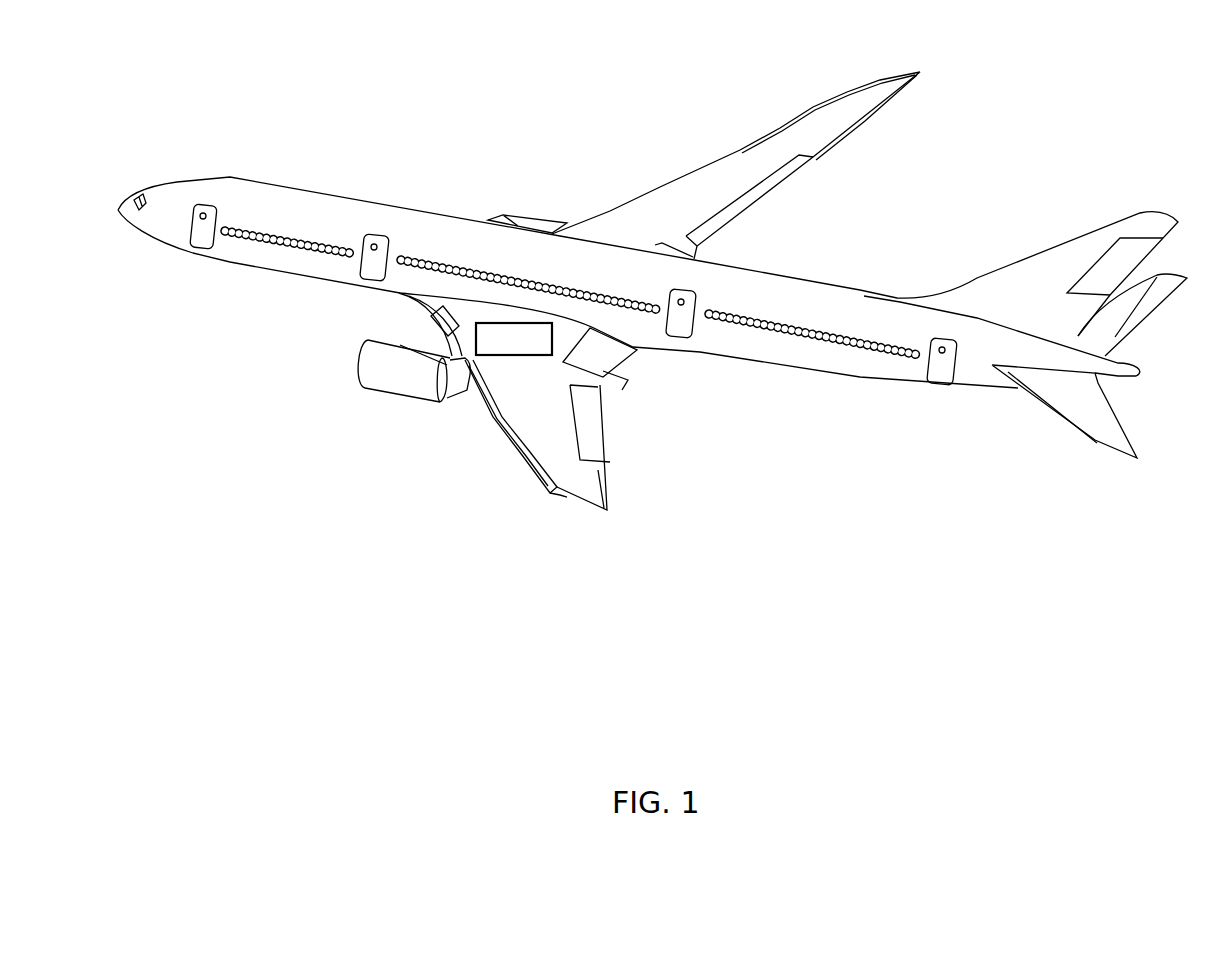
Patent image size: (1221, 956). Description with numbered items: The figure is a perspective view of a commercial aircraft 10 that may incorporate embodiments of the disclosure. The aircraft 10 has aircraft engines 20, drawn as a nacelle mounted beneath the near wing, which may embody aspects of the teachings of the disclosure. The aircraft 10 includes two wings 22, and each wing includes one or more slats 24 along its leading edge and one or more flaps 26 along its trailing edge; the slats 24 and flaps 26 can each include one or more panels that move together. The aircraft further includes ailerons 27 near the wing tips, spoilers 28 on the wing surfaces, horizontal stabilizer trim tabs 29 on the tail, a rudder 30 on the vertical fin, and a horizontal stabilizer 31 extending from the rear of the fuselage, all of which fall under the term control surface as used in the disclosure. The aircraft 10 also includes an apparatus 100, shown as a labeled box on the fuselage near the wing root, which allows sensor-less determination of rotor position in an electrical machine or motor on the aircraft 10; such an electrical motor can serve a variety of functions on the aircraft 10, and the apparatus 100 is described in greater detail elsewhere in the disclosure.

The commercial aircraft 10 is at (1047, 75).
The aircraft engines 20 is at (372, 369).
The wings 22 is at (741, 152).
The slats 24 is at (517, 450).
The flaps 26 is at (772, 192).
The ailerons 27 is at (862, 129).
The spoilers 28 is at (819, 114).
The horizontal stabilizer trim tabs 29 is at (1031, 408).
The rudder 30 is at (1112, 258).
The horizontal stabilizer 31 is at (1102, 411).
The apparatus 100 is at (498, 349).